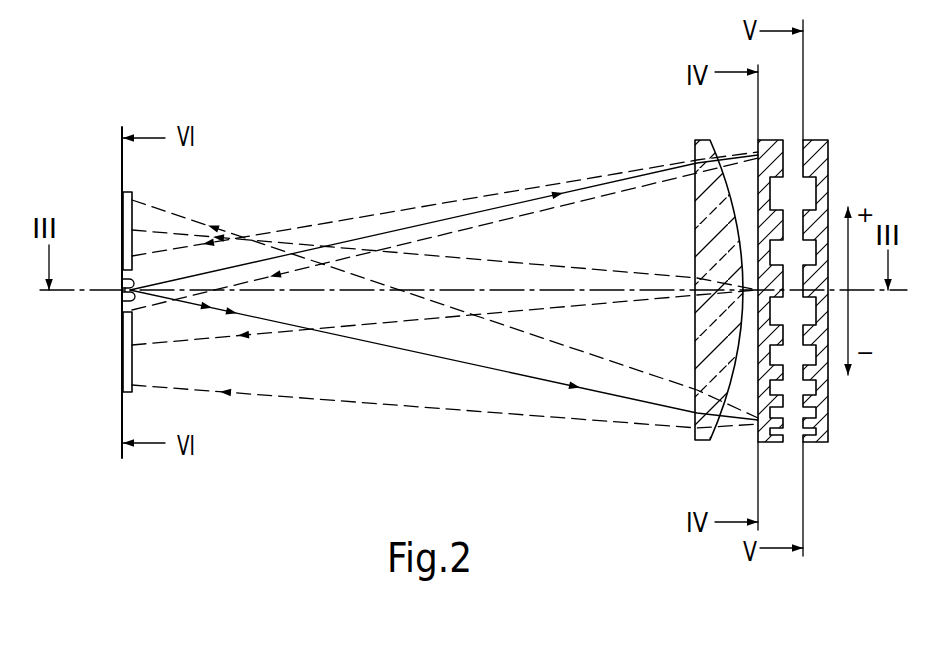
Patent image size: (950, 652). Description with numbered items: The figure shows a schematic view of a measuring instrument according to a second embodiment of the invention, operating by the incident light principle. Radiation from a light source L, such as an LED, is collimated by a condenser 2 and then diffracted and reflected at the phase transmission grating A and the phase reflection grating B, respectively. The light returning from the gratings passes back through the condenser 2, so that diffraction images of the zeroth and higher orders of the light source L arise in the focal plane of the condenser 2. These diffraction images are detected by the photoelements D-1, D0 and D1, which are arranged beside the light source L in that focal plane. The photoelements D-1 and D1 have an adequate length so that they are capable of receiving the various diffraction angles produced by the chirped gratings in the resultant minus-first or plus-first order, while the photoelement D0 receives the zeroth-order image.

The photoelement D1 is at (123, 210).
The photoelement D0 is at (123, 282).
The light source L is at (123, 300).
The photoelement D-1 is at (123, 388).
The condenser 2 is at (706, 440).
The phase transmission grating A is at (765, 142).
The phase reflection grating B is at (815, 142).